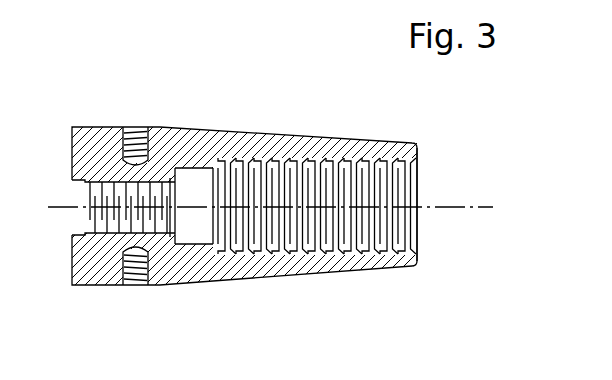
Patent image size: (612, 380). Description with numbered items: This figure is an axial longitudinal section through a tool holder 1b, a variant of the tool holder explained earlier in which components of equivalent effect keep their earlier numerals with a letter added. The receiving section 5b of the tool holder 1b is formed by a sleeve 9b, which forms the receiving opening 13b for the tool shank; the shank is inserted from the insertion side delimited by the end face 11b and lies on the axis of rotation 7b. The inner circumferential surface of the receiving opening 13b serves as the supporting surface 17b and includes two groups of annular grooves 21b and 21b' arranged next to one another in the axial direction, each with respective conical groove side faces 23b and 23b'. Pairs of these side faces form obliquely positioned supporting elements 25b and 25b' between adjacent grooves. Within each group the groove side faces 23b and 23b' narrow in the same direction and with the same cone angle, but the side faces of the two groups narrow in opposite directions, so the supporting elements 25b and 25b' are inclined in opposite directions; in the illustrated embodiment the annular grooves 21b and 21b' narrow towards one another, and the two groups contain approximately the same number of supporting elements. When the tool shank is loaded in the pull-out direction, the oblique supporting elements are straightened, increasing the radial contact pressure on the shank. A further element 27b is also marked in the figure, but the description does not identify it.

The tool holder 1b is at (100, 118).
The receiving section 5b is at (308, 121).
The axis of rotation 7b is at (470, 200).
The sleeve 9b is at (275, 130).
The end face 11b is at (418, 152).
The receiving opening 13b is at (405, 226).
The supporting surface 17b is at (342, 244).
The annular grooves 21b is at (386, 244).
The annular grooves 21b' is at (247, 256).
The groove side faces 23b is at (373, 167).
The groove side faces 23b' is at (209, 163).
The supporting elements 25b is at (319, 261).
The supporting elements 25b' is at (205, 248).
The gap 27b is at (300, 254).